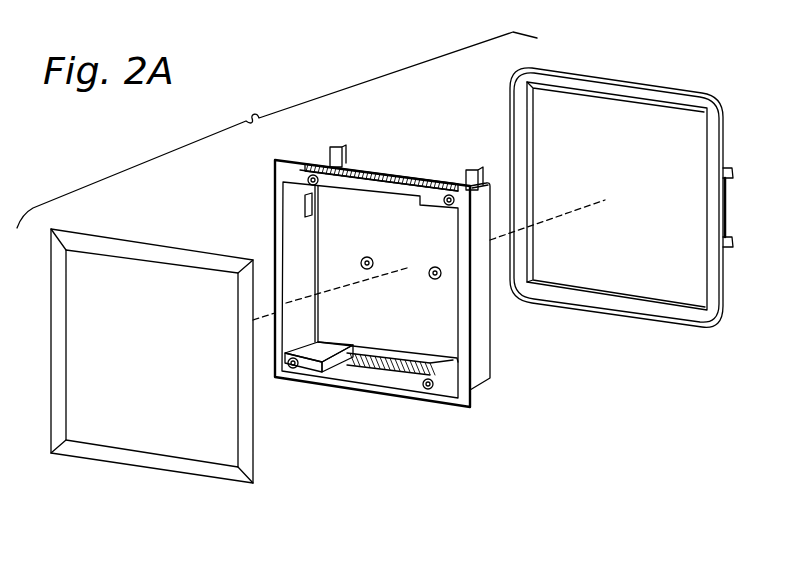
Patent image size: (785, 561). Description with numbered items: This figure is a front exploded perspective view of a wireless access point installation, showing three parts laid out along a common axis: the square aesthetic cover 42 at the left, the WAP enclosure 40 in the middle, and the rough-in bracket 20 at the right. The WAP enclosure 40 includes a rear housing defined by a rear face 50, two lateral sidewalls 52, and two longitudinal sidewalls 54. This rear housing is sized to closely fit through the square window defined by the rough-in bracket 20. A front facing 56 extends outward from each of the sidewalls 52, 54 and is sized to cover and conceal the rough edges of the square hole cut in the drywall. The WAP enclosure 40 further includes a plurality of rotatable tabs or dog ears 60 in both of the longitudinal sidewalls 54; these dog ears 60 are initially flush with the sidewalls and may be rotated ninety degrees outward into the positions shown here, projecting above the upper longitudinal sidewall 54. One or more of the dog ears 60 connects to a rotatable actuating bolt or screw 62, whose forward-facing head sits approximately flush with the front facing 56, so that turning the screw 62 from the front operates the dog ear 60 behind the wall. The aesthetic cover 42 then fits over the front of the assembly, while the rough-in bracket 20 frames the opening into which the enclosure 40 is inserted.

The rough-in bracket 20 is at (625, 332).
The WAP enclosure 40 is at (372, 401).
The square aesthetic cover 42 is at (97, 466).
The rear face 50 is at (425, 328).
The lateral sidewalls 52 is at (300, 322).
The longitudinal sidewalls 54 is at (441, 178).
The front facing 56 is at (285, 171).
The dog ears 60 is at (344, 157).
The actuating screw 62 is at (311, 176).